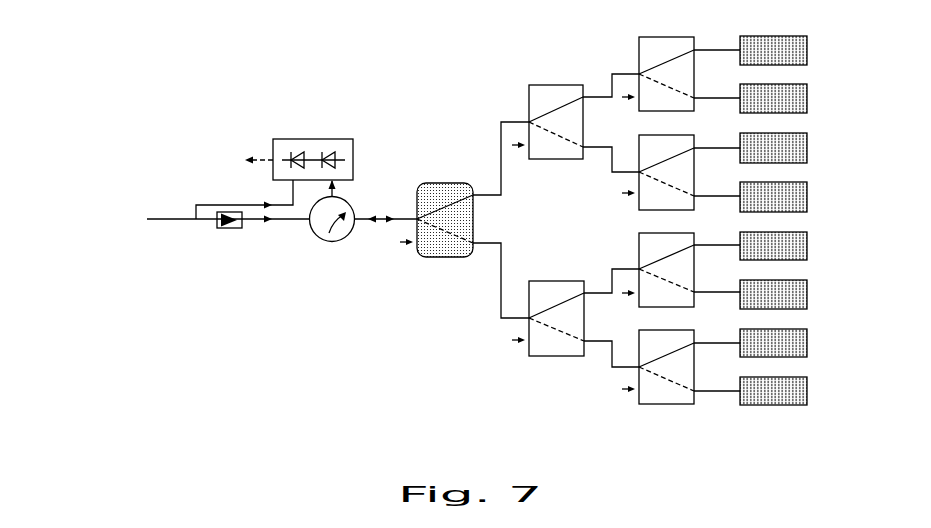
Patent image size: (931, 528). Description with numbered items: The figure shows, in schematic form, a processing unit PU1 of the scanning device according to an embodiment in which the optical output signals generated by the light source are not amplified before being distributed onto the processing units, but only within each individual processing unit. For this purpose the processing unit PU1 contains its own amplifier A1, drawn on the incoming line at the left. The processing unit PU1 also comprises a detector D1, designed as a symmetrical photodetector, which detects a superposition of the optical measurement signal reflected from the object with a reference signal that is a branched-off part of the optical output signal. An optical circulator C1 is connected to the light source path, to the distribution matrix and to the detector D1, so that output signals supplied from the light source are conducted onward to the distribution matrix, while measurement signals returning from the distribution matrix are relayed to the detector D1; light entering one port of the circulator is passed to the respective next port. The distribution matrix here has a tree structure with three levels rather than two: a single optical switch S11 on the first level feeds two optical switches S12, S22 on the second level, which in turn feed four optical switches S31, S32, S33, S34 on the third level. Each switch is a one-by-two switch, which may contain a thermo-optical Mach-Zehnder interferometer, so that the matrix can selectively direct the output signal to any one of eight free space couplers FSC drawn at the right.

The processing unit PU1 is at (166, 100).
The amplifier A1 is at (230, 231).
The detector D1 is at (313, 138).
The optical circulator C1 is at (326, 240).
The optical switch S11 is at (445, 183).
The optical switch S12 is at (530, 108).
The optical switch S22 is at (528, 331).
The optical switch S31 is at (639, 58).
The optical switch S32 is at (639, 188).
The optical switch S33 is at (639, 252).
The optical switch S34 is at (639, 383).
The free space coupler FSC is at (809, 98).